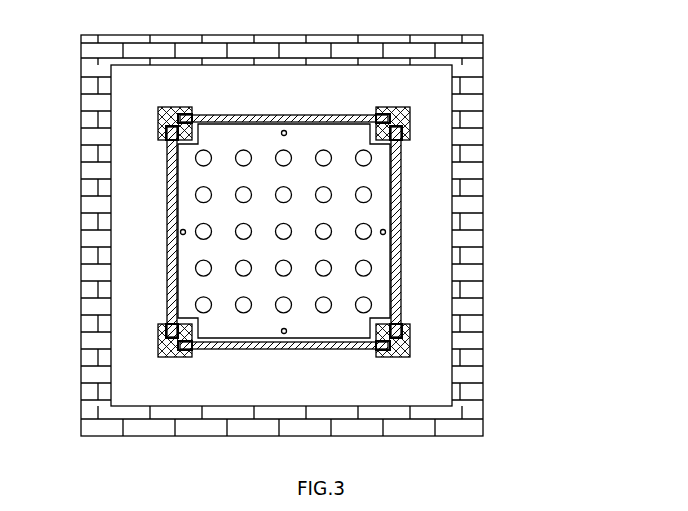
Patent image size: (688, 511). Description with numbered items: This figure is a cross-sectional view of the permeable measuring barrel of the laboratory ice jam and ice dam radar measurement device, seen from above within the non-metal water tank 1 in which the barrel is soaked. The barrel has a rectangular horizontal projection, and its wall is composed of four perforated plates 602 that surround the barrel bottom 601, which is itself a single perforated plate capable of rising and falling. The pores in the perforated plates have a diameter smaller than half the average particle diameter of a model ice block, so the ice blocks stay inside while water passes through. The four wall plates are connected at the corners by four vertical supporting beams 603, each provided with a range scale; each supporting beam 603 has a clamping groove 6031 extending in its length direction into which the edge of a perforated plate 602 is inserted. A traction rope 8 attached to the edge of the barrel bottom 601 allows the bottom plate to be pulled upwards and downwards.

The non-metal water tank 1 is at (465, 393).
The traction rope 8 is at (178, 231).
The barrel bottom 601 is at (378, 182).
The perforated plate 602 is at (398, 243).
The vertical supporting beam 603 is at (406, 327).
The clamping groove 6031 is at (406, 338).